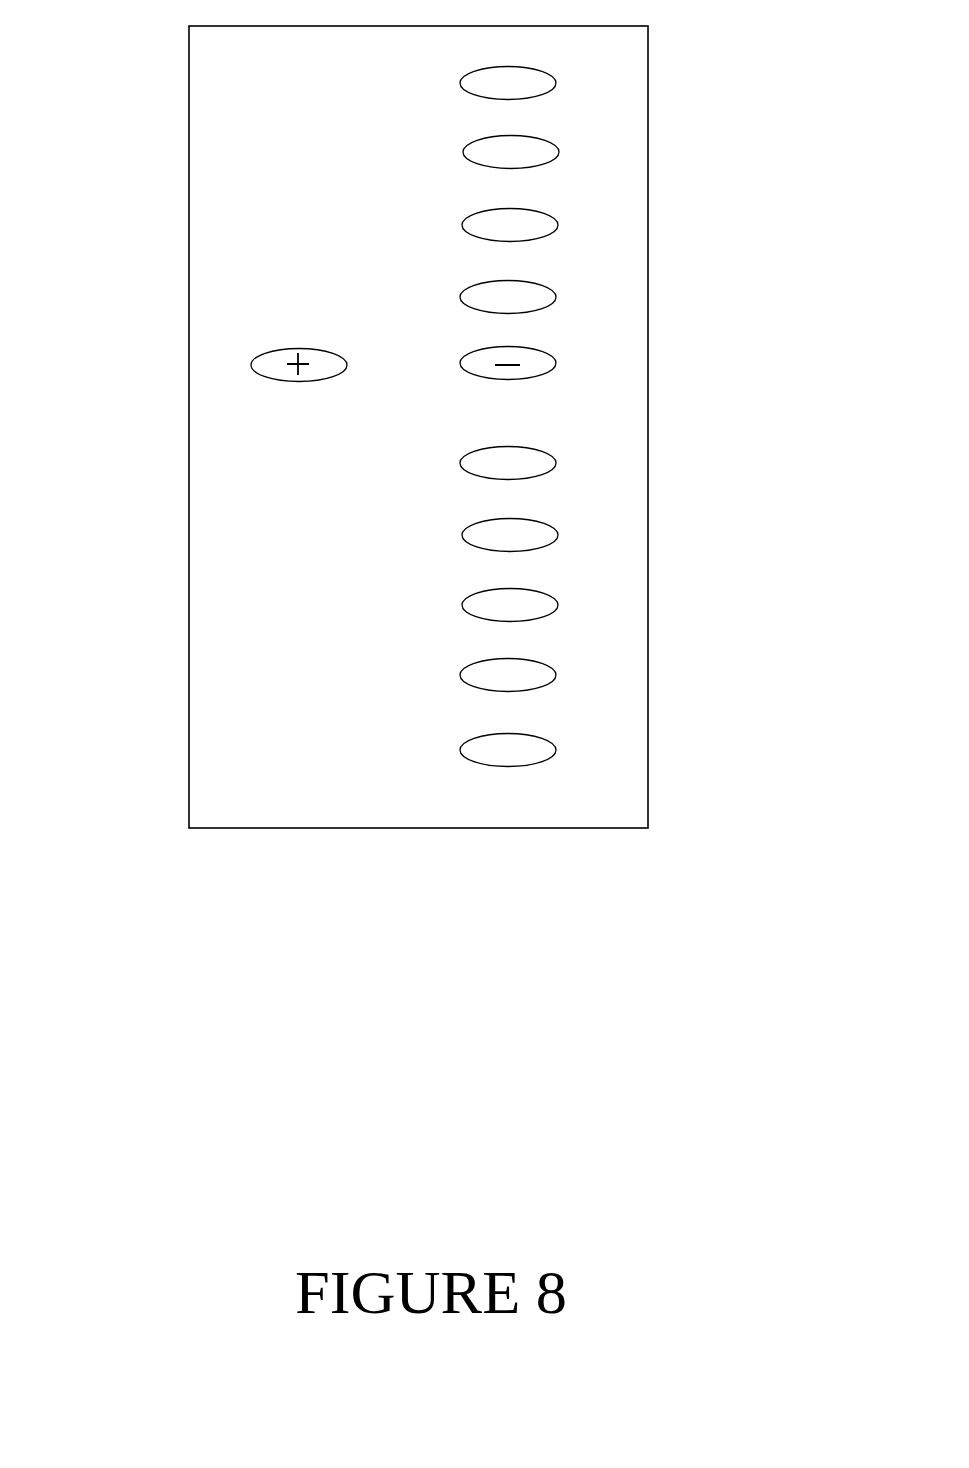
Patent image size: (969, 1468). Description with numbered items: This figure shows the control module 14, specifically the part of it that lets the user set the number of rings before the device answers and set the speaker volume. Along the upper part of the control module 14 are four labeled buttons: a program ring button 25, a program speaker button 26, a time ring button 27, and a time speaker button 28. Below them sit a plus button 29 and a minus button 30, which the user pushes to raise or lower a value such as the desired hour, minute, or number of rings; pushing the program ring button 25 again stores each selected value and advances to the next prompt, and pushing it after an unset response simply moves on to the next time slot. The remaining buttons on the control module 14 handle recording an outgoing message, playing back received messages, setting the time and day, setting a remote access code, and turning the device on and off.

The control module 14 is at (383, 838).
The program ring button 25 is at (570, 82).
The program speaker button 26 is at (570, 152).
The time ring button 27 is at (575, 221).
The time speaker button 28 is at (568, 291).
The plus button 29 is at (238, 355).
The minus button 30 is at (565, 357).